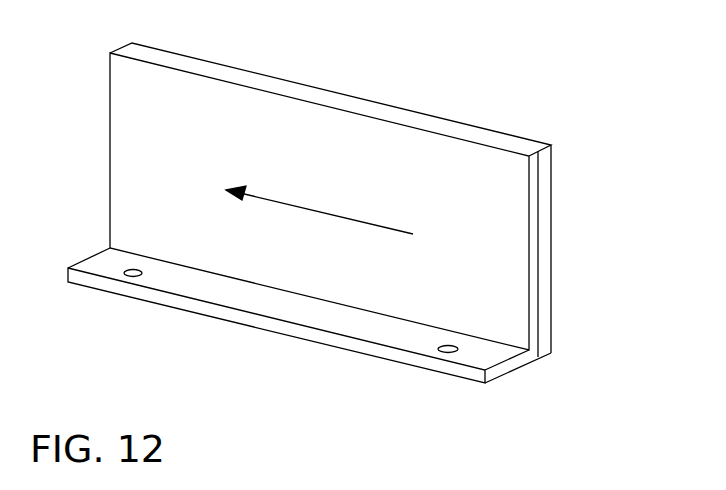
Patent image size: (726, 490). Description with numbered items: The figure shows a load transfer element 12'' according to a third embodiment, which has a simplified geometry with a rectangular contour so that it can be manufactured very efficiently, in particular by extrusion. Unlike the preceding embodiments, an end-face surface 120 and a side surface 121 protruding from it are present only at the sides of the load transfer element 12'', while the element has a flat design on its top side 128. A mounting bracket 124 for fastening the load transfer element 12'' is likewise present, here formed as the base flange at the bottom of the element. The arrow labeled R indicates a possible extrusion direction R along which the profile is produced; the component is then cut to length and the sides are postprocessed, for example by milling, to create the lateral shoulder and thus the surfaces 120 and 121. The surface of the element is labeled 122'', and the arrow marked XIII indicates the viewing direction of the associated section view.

The load transfer element 12'' is at (362, 204).
The end-face surface 120 is at (538, 173).
The side surface 121 is at (546, 223).
The front surface of wall 122'' is at (320, 201).
The mounting bracket 124 is at (299, 308).
The top side 128 is at (273, 85).
The extrusion direction R is at (328, 213).
The section view indicator XIII is at (596, 285).